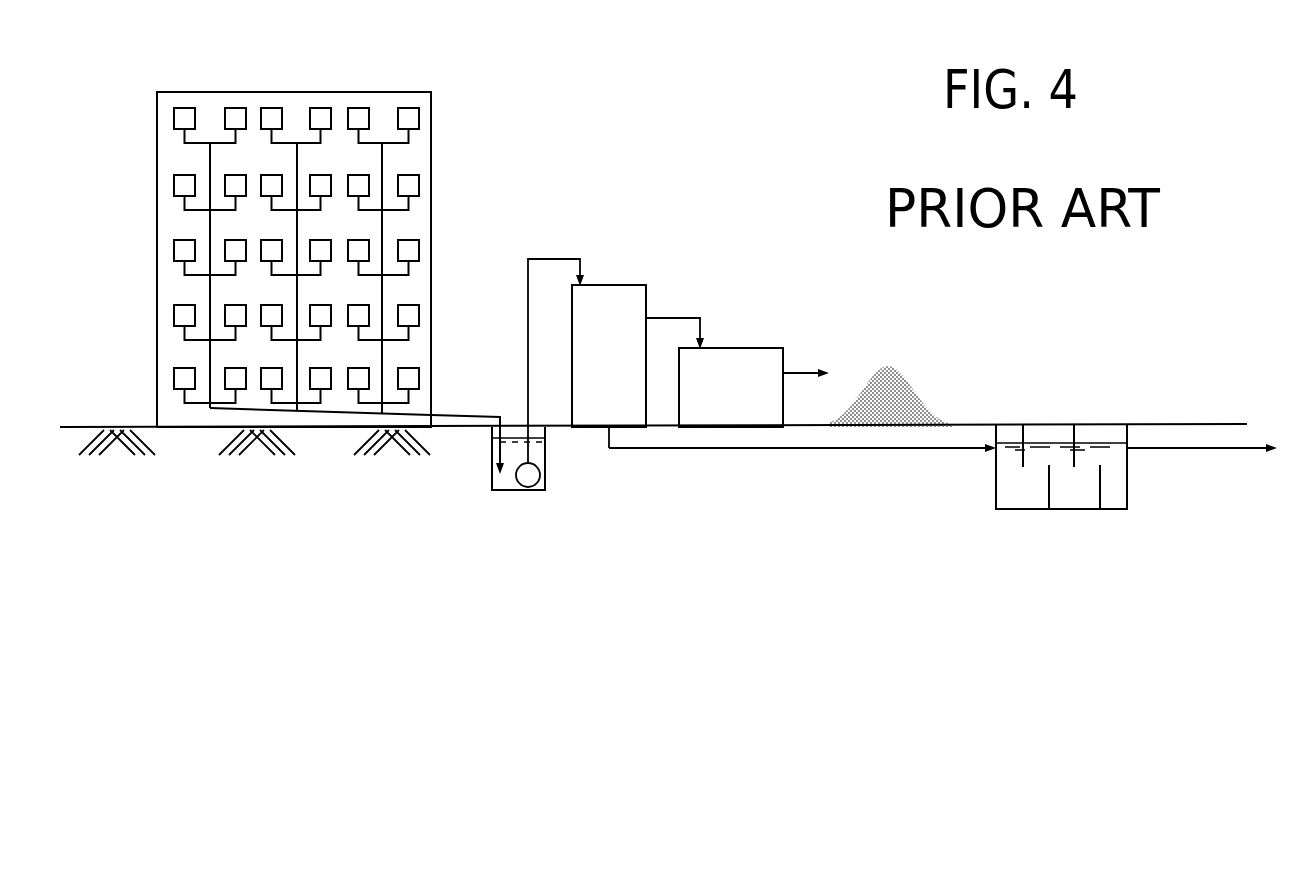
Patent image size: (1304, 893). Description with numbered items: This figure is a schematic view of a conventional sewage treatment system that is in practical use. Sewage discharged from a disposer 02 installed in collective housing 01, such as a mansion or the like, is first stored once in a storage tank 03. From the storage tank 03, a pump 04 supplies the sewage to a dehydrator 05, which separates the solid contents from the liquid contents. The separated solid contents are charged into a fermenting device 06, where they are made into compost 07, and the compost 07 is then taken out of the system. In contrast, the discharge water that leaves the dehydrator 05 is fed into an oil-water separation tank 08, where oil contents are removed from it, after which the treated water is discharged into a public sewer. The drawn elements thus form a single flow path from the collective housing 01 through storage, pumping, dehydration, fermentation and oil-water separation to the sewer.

The collective housing 01 is at (354, 260).
The disposer 02 is at (410, 183).
The storage tank 03 is at (510, 480).
The pump 04 is at (543, 477).
The dehydrator 05 is at (610, 280).
The fermenting device 06 is at (742, 347).
The compost 07 is at (923, 388).
The oil-water separation tank 08 is at (1033, 490).